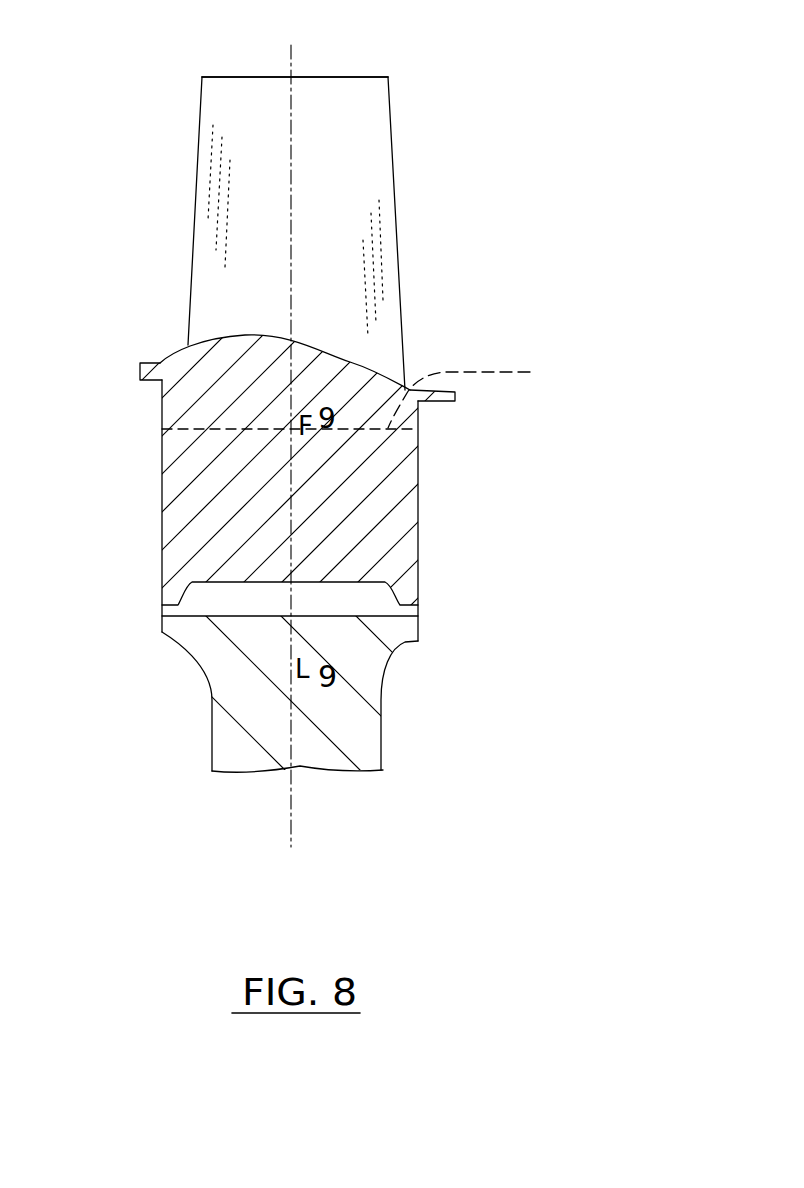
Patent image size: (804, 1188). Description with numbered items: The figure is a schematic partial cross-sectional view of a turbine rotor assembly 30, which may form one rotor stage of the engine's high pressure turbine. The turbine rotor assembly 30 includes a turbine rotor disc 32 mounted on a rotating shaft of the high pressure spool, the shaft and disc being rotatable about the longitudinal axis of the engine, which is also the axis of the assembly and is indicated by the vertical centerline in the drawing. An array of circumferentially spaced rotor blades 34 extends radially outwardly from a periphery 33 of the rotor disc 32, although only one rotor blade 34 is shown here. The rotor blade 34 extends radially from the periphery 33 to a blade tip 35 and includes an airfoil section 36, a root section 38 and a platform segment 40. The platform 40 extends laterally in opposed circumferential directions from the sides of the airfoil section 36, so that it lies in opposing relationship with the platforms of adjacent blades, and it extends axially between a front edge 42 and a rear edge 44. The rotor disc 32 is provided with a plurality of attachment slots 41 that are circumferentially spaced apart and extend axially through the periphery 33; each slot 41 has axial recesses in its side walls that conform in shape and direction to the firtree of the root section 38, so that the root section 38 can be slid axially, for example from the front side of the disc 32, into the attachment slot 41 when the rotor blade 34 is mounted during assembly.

The turbine rotor assembly 30 is at (488, 271).
The turbine rotor disc 32 is at (325, 750).
The periphery 33 is at (477, 391).
The rotor blade 34 is at (200, 120).
The blade tip 35 is at (353, 77).
The airfoil section 36 is at (215, 260).
The root section 38 is at (172, 485).
The platform segment 40 is at (352, 360).
The attachment slot 41 is at (199, 604).
The front edge 42 is at (140, 368).
The rear edge 44 is at (457, 397).